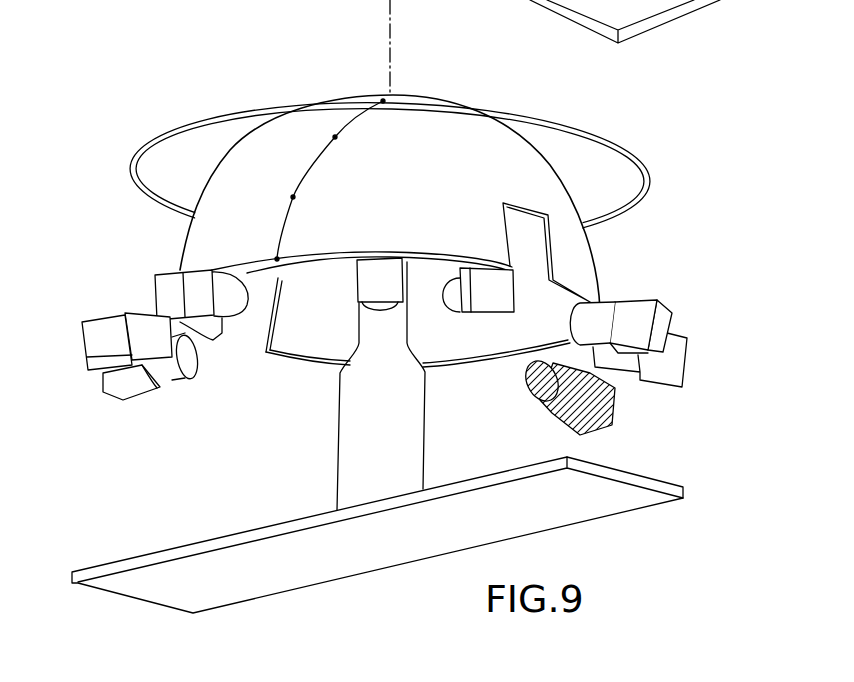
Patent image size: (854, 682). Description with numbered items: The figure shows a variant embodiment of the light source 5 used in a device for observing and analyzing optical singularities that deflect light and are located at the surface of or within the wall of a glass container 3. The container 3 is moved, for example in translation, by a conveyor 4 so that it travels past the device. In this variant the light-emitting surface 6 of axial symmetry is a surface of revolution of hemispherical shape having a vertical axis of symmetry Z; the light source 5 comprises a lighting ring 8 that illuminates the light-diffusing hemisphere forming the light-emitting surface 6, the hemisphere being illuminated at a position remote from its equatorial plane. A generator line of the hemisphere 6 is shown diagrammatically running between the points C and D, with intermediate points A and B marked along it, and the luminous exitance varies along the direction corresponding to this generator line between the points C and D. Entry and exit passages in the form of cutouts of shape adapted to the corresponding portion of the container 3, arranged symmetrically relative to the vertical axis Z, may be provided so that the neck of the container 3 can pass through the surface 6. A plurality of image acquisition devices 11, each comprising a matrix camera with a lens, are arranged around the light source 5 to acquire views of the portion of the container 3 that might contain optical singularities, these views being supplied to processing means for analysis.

The glass container 3 is at (411, 432).
The conveyor 4 is at (633, 507).
The light source 5 is at (254, 102).
The light-emitting surface of axial symmetry 6 is at (197, 232).
The lighting ring 8 is at (162, 147).
The image acquisition device 11 is at (167, 288).
The vertical axis of symmetry Z is at (393, 12).
The point A is at (324, 134).
The point B is at (283, 193).
The point C is at (375, 105).
The point D is at (267, 248).